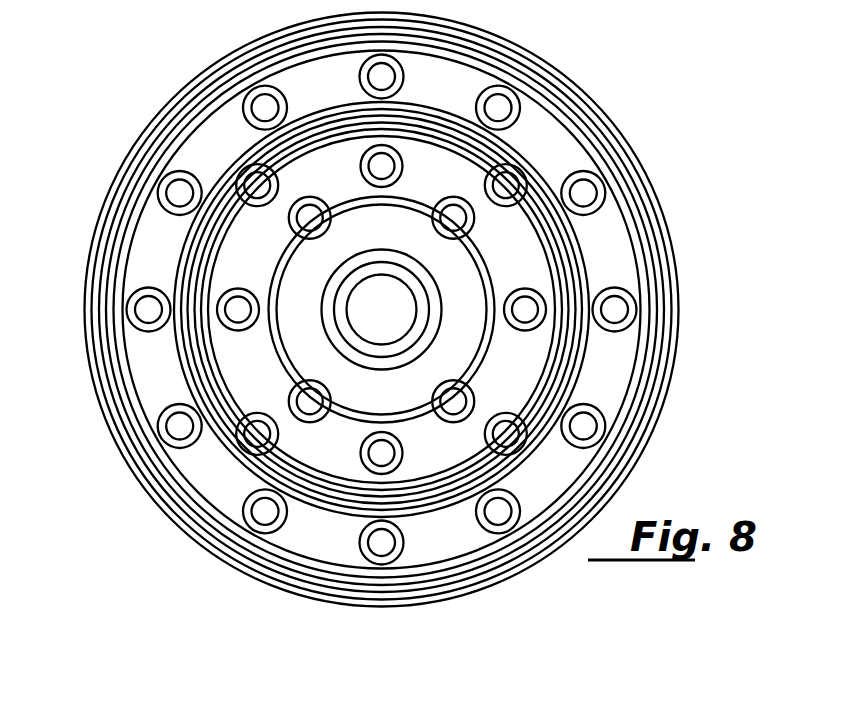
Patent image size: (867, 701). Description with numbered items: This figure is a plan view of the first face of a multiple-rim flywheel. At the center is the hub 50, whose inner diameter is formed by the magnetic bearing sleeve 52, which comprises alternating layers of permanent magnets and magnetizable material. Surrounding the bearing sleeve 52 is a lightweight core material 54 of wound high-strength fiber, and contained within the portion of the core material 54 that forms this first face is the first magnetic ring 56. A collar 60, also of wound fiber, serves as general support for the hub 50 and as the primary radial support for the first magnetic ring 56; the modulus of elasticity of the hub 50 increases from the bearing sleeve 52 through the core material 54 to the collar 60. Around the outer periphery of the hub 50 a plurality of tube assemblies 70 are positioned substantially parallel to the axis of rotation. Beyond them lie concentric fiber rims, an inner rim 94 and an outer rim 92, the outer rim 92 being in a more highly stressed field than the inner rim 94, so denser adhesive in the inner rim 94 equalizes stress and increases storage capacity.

The hub 50 is at (292, 223).
The magnetic bearing sleeve 52 is at (408, 348).
The core material 54 is at (428, 206).
The first magnetic ring 56 is at (312, 315).
The collar 60 is at (270, 273).
The tube assemblies 70 is at (592, 172).
The outer rim 92 is at (125, 410).
The inner rim 94 is at (572, 278).